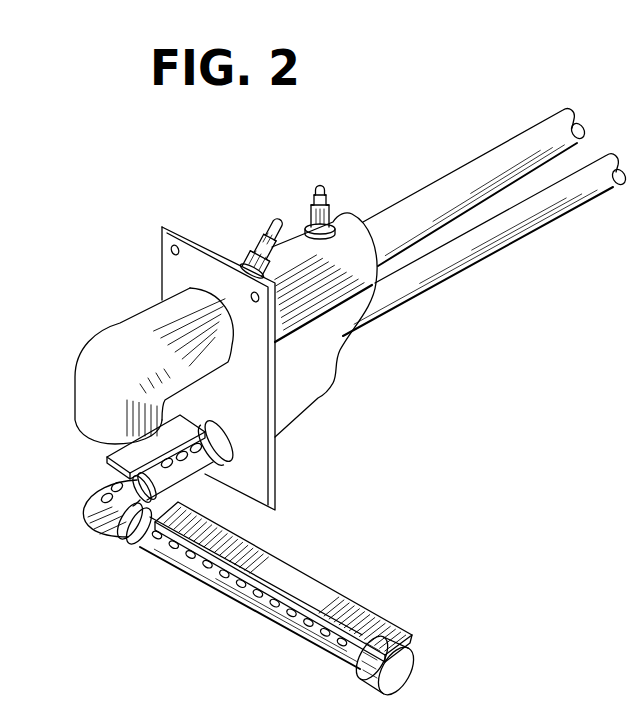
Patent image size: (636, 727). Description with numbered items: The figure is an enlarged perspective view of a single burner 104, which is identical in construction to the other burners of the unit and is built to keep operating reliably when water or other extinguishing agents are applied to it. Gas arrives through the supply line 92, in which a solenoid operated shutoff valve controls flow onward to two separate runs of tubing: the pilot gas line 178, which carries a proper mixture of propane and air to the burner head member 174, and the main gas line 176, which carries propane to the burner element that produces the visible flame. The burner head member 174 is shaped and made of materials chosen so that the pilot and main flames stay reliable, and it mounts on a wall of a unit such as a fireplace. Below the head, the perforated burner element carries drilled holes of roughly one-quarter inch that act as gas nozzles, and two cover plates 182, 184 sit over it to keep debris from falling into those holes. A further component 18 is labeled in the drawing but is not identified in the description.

The perforated lance tube 18 is at (250, 598).
The supply line 92 is at (619, 12).
The burner 104 is at (494, 126).
The burner head member 174 is at (117, 343).
The main gas line 176 is at (428, 198).
The pilot gas line 178 is at (448, 270).
The cover plate 182 is at (313, 590).
The cover plate 184 is at (105, 453).